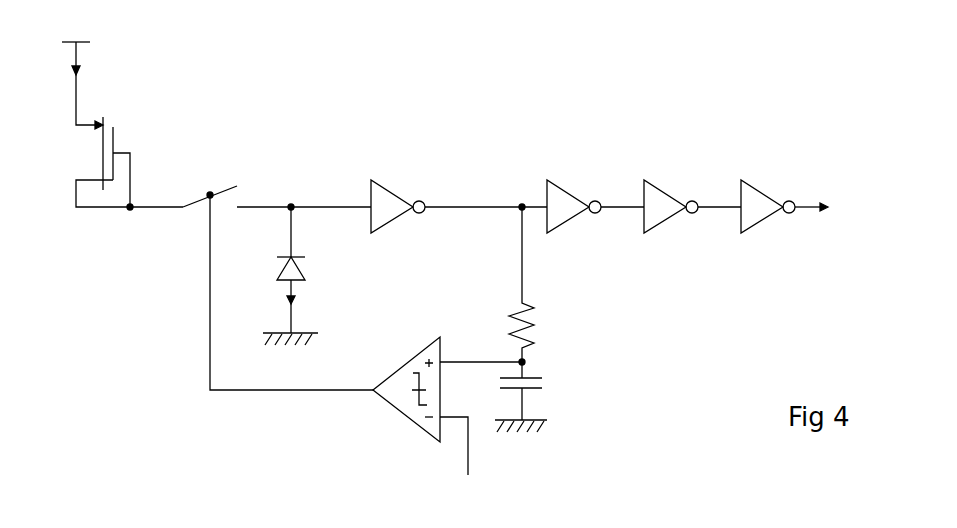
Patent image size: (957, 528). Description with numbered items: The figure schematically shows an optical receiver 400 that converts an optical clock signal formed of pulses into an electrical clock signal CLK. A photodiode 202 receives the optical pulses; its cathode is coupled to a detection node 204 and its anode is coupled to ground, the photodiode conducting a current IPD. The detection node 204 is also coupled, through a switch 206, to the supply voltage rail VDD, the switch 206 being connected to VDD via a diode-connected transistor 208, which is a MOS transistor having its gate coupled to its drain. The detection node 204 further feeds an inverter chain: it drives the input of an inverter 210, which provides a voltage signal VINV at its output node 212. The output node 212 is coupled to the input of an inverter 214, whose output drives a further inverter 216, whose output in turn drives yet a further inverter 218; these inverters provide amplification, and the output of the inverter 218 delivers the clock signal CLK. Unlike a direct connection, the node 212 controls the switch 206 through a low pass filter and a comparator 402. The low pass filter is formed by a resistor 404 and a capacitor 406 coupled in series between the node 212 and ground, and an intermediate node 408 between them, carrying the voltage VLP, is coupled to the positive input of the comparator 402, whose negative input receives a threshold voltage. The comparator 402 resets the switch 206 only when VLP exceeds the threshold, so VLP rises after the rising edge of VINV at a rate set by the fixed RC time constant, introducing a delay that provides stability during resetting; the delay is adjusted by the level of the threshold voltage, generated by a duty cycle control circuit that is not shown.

The optical receiver 400 is at (747, 66).
The photodiode 202 is at (306, 268).
The detection node 204 is at (289, 210).
The switch 206 is at (238, 187).
The diode-connected transistor 208 is at (125, 143).
The inverter 210 is at (389, 202).
The output node 212 is at (519, 212).
The inverter 214 is at (565, 192).
The further inverter 216 is at (661, 192).
The yet further inverter 218 is at (759, 195).
The comparator 402 is at (401, 404).
The resistor 404 is at (535, 316).
The capacitor 406 is at (545, 388).
The intermediate node 408 is at (527, 364).